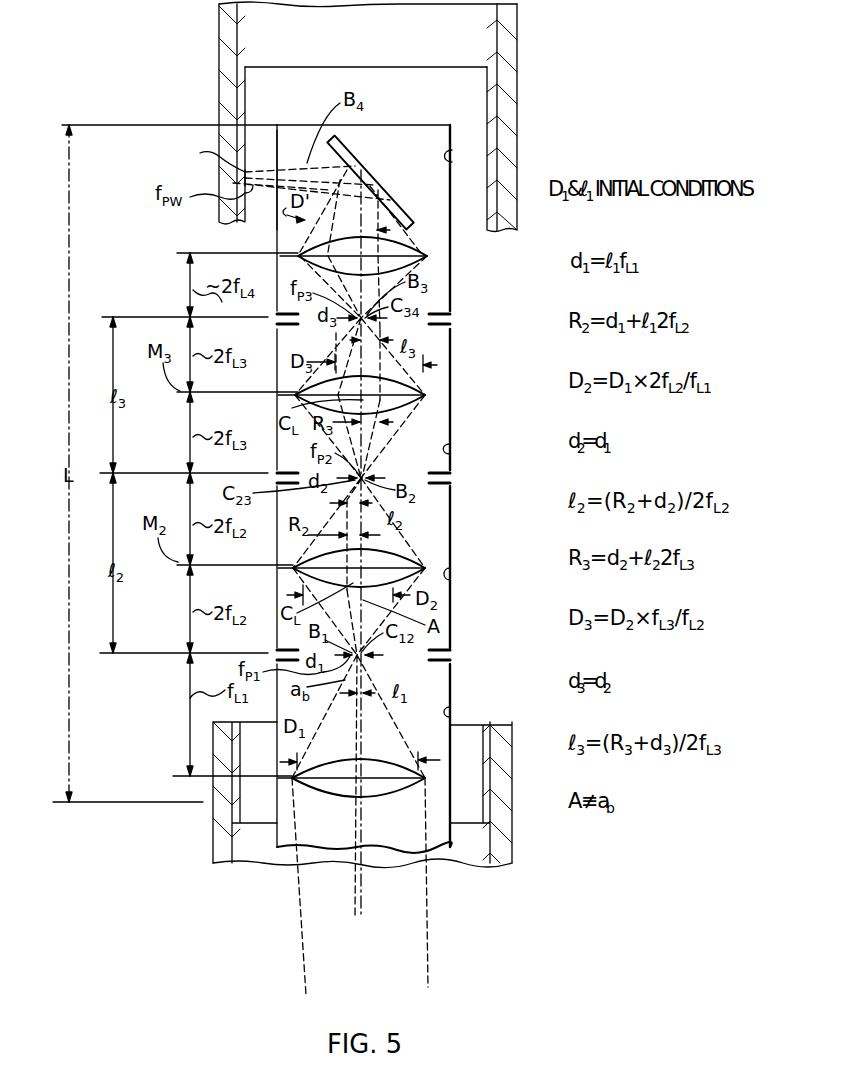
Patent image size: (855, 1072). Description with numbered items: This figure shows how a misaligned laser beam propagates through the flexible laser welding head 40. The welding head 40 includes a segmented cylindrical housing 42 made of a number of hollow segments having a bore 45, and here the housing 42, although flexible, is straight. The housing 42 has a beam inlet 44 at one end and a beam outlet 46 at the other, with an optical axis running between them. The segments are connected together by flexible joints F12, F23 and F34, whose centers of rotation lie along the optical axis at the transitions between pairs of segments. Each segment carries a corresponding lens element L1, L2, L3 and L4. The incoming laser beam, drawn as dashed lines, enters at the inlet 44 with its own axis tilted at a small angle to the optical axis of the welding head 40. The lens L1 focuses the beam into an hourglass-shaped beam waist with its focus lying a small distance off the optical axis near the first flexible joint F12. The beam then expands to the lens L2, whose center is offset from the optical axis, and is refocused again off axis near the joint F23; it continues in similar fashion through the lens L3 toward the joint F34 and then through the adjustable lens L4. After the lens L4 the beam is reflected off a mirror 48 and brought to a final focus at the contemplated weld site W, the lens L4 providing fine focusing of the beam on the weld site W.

The flexible laser welding head 40 is at (401, 468).
The segmented cylindrical housing 42 is at (452, 168).
The beam inlet 44 is at (288, 837).
The bore 45 is at (460, 712).
The beam outlet 46 is at (277, 193).
The mirror 48 is at (371, 165).
The first lens element L1 is at (393, 763).
The second lens element L2 is at (407, 558).
The third lens element L3 is at (423, 400).
The fourth lens element L4 is at (427, 256).
The first flexible joint F12 is at (452, 662).
The second flexible joint F23 is at (452, 488).
The third flexible joint F34 is at (452, 328).
The weld site W is at (215, 164).